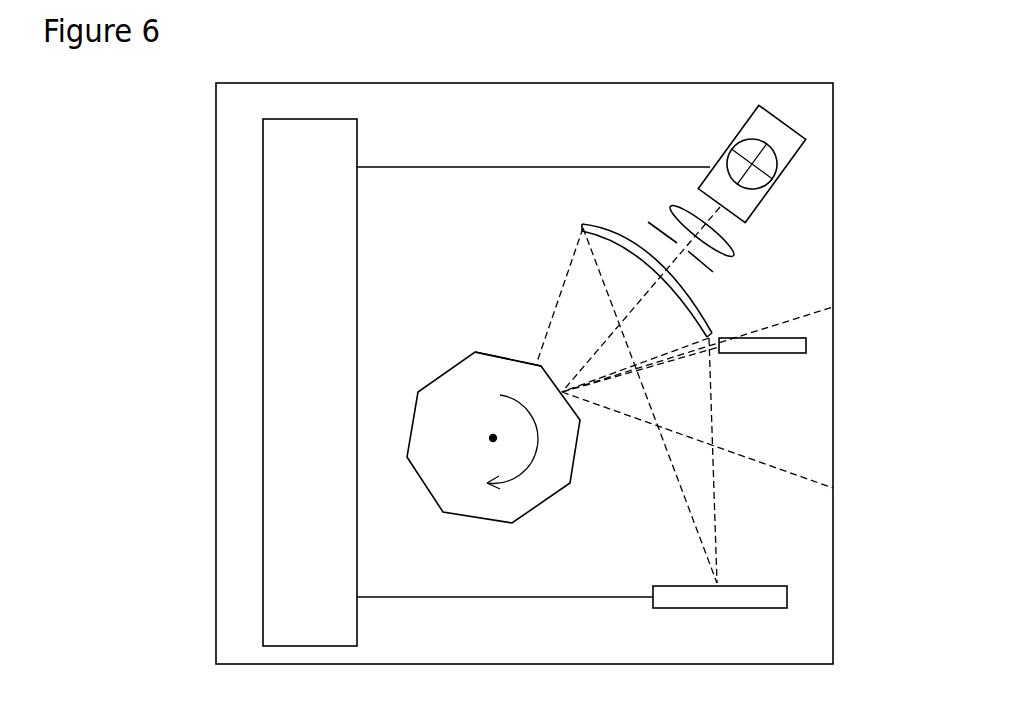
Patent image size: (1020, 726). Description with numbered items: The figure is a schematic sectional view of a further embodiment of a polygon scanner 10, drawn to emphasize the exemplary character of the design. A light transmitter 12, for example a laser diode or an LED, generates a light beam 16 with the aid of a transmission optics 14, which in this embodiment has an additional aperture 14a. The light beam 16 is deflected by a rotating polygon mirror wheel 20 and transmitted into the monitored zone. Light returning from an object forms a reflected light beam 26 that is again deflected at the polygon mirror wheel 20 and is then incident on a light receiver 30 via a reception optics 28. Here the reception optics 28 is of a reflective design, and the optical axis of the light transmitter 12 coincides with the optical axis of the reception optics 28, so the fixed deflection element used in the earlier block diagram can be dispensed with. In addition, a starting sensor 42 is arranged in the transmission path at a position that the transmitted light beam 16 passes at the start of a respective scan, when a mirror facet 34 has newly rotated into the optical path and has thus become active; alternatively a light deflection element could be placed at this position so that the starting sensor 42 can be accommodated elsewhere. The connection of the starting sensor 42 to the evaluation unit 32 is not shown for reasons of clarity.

The polygon scanner 10 is at (462, 85).
The light transmitter 12 is at (792, 155).
The transmission optics 14 is at (730, 245).
The aperture 14a is at (648, 222).
The light beam 16 is at (823, 315).
The polygon mirror wheel 20 is at (425, 483).
The reflected light beam 26 is at (683, 490).
The reception optics 28 is at (583, 224).
The light receiver 30 is at (688, 603).
The evaluation unit 32 is at (292, 367).
The mirror facet 34 is at (507, 357).
The starting sensor 42 is at (806, 349).